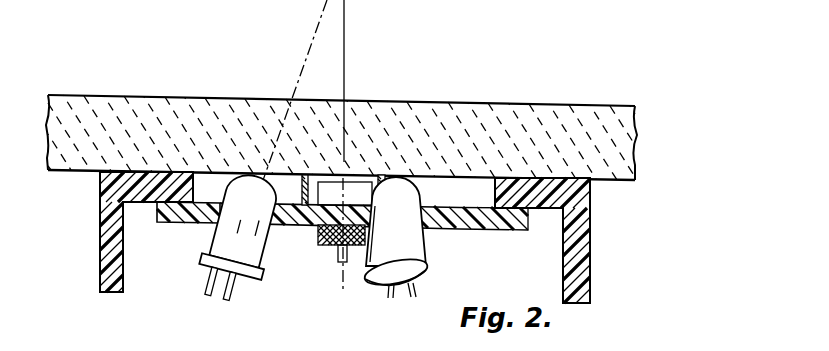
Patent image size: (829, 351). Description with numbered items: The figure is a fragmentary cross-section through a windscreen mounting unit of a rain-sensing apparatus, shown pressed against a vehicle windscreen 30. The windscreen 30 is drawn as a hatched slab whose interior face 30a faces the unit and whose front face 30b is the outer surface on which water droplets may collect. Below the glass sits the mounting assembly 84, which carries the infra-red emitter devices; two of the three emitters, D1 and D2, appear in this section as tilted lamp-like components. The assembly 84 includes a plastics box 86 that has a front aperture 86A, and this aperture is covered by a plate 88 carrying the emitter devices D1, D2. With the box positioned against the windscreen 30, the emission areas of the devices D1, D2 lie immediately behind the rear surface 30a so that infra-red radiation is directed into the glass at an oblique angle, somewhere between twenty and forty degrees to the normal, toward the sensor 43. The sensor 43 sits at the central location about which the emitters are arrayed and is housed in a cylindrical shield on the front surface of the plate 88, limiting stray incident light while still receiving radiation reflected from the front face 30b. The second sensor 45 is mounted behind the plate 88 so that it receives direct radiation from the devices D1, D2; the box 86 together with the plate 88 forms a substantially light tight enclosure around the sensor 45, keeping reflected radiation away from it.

The windscreen 30 is at (573, 104).
The interior face of the windscreen 30a is at (602, 182).
The front face of the windscreen 30b is at (618, 105).
The mounting assembly 84 is at (88, 200).
The plastics box 86 is at (108, 228).
The front aperture 86A is at (192, 222).
The sensor 43 is at (325, 197).
The sensor 45 is at (332, 240).
The plate 88 is at (483, 222).
The infra-red emitter device D1 is at (205, 263).
The infra-red emitter device D2 is at (423, 264).